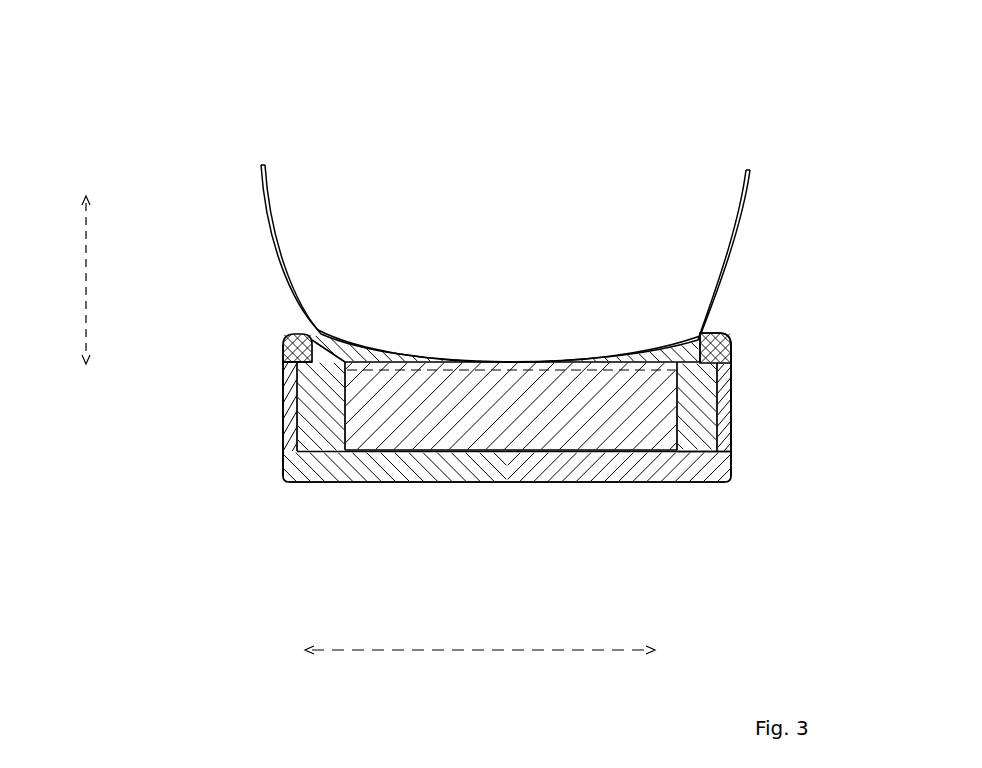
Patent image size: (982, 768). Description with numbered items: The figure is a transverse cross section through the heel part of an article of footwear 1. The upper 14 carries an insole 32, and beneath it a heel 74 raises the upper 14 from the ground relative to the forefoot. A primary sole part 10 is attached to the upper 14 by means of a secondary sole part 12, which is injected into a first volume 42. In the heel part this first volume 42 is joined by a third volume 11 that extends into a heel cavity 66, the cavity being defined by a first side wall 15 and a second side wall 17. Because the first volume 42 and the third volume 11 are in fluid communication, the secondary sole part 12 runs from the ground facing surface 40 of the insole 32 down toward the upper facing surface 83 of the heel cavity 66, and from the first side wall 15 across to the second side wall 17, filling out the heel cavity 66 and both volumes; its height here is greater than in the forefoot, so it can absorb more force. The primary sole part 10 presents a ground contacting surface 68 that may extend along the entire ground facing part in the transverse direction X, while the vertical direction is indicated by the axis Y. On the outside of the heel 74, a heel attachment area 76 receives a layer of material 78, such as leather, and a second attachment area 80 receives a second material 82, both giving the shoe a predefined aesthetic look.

The article of footwear 1 is at (748, 120).
The primary sole part 10 is at (582, 483).
The third volume 11 is at (668, 466).
The secondary sole part 12 is at (500, 361).
The upper 14 is at (733, 253).
The first side wall 15 is at (290, 428).
The second side wall 17 is at (705, 430).
The insole 32 is at (587, 352).
The ground facing surface 40 is at (430, 357).
The first volume 42 is at (657, 343).
The heel cavity 66 is at (375, 348).
The ground contacting surface 68 is at (367, 483).
The heel 74 is at (790, 340).
The heel attachment area 76 is at (290, 371).
The layer of material 78 is at (290, 397).
The second attachment area 80 is at (293, 334).
The second material 82 is at (290, 343).
The upper facing surface 83 is at (470, 438).
The transverse direction X is at (502, 651).
The Y axis Y is at (86, 300).